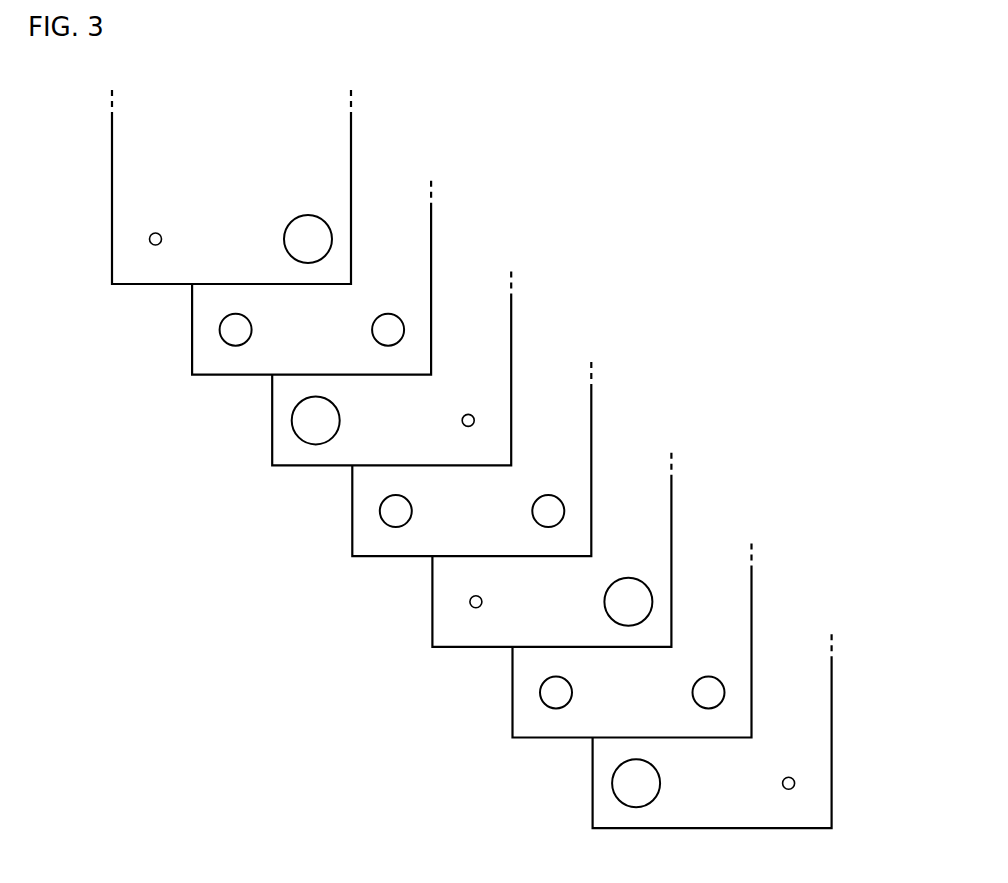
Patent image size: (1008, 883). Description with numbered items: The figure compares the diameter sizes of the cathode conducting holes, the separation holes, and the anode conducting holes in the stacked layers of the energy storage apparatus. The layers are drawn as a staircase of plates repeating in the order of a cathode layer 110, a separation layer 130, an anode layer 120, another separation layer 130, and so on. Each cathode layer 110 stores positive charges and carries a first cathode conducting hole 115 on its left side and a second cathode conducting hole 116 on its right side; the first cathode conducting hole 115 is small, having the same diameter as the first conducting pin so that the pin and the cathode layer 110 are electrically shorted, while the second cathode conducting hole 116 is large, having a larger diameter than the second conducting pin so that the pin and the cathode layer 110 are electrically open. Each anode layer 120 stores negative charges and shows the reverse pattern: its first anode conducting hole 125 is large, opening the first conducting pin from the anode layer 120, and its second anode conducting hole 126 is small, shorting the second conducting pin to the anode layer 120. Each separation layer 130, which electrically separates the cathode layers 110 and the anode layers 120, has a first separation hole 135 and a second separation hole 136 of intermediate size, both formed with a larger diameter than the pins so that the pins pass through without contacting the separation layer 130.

The cathode layer 110 is at (122, 186).
The first cathode conducting hole 115 is at (150, 239).
The second cathode conducting hole 116 is at (318, 240).
The anode layer 120 is at (282, 389).
The first anode conducting hole 125 is at (310, 420).
The second anode conducting hole 126 is at (474, 421).
The separation layer 130 is at (202, 299).
The first separation hole 135 is at (230, 330).
The second separation hole 136 is at (398, 331).